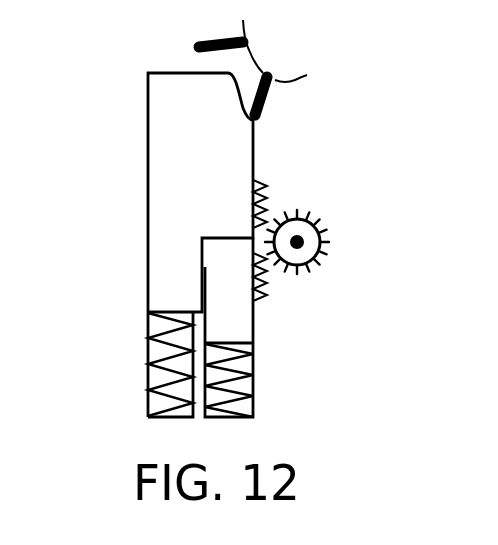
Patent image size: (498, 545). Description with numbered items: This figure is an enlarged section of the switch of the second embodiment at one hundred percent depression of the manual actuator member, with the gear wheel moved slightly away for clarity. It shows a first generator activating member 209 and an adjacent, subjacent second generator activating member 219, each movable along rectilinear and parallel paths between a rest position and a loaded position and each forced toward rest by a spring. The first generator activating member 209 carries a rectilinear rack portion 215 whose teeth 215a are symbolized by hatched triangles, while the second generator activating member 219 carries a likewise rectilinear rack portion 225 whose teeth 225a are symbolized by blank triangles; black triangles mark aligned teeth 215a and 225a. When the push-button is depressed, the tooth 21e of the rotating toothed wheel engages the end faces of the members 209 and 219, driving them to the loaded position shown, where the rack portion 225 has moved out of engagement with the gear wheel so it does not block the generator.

The first generator activating member 209 is at (148, 205).
The second generator activating member 219 is at (240, 324).
The tooth 21e is at (268, 98).
The teeth 215a is at (263, 187).
The rack portion 215 is at (282, 201).
The teeth 225a is at (257, 295).
The rack portion 225 is at (284, 288).